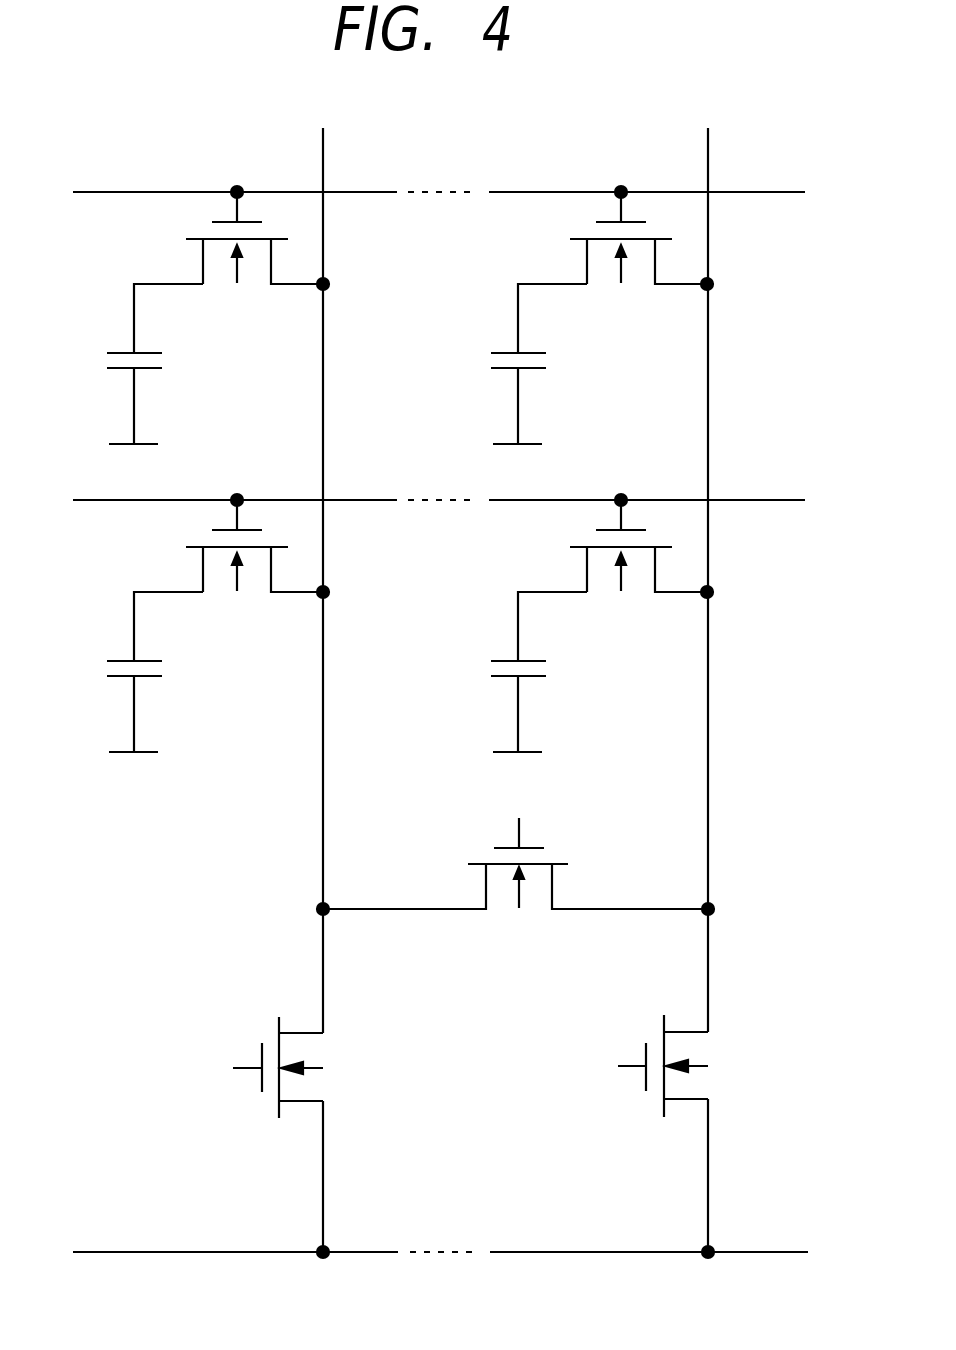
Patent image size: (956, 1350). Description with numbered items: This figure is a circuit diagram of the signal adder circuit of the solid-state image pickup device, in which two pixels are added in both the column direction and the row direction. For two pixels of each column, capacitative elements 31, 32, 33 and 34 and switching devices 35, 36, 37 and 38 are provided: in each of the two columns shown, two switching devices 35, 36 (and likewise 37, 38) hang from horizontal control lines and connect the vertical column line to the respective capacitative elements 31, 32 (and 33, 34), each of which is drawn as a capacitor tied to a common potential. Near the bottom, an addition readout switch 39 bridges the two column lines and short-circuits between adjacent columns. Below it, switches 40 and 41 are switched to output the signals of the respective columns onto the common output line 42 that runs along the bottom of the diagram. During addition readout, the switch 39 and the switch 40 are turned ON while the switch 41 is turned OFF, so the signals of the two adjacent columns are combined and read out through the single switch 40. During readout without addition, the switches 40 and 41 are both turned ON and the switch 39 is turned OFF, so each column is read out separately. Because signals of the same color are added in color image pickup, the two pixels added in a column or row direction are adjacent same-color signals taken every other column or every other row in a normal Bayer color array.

The capacitative element 31 is at (142, 672).
The capacitative element 32 is at (122, 370).
The capacitative element 33 is at (526, 672).
The capacitative element 34 is at (526, 364).
The switching device 35 is at (220, 546).
The switching device 36 is at (225, 219).
The switching device 37 is at (604, 546).
The switching device 38 is at (604, 238).
The addition readout switch 39 is at (530, 845).
The switch 40 is at (257, 1080).
The switch 41 is at (643, 1078).
The line 42 is at (120, 1251).